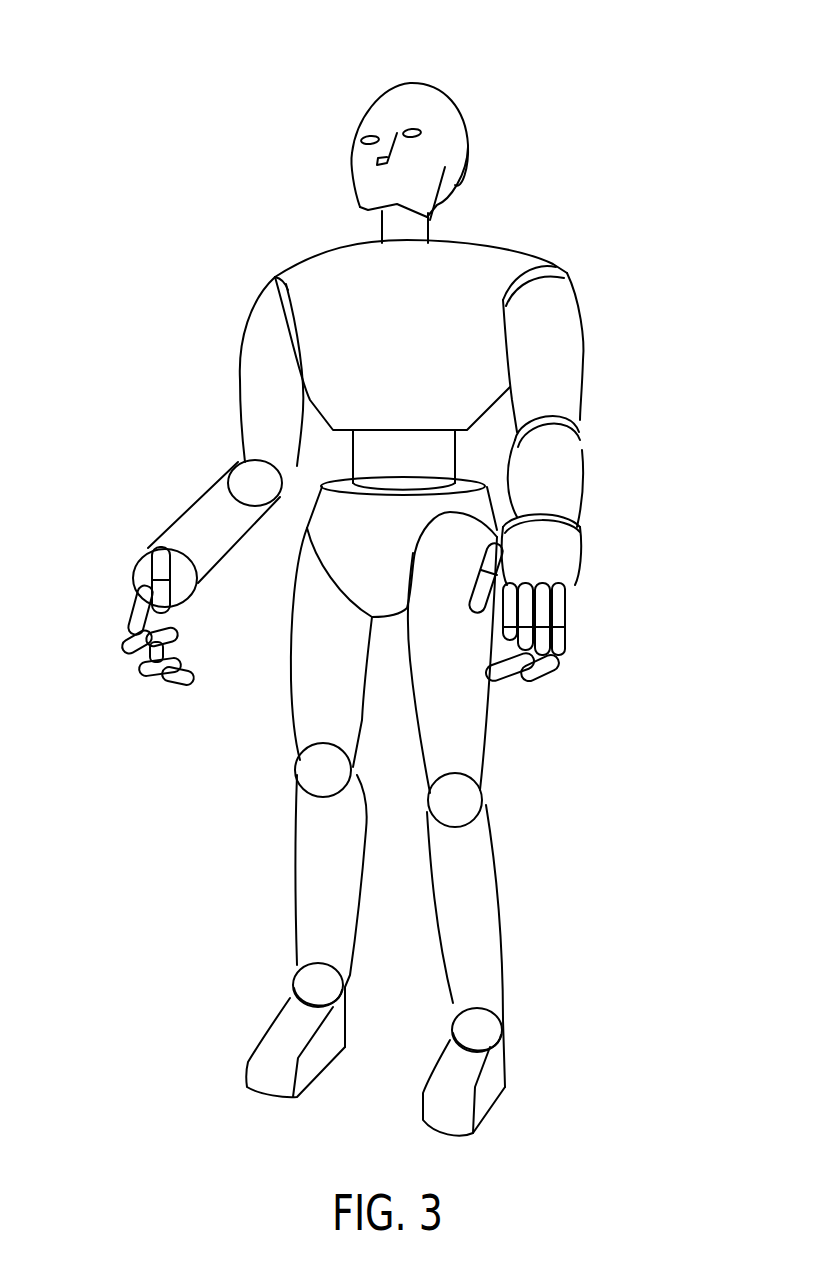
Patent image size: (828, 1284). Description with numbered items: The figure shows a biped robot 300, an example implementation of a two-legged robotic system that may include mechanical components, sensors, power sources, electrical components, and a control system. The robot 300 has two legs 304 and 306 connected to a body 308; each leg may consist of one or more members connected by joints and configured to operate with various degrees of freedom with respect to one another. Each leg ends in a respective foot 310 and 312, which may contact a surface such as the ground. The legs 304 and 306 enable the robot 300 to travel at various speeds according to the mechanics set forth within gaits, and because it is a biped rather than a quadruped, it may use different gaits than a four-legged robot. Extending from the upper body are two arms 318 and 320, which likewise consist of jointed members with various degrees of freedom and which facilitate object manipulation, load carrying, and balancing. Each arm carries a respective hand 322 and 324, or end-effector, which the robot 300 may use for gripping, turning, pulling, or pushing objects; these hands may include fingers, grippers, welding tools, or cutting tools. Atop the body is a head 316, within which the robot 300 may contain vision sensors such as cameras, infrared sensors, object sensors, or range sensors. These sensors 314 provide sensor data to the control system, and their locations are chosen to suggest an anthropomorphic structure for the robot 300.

The biped robot 300 is at (578, 193).
The leg 304 is at (505, 852).
The leg 306 is at (268, 832).
The body 308 is at (287, 533).
The foot 310 is at (500, 1073).
The foot 312 is at (272, 1017).
The sensor 314 is at (366, 139).
The head 316 is at (453, 84).
The arm 318 is at (593, 490).
The arm 320 is at (168, 508).
The hand 322 is at (577, 573).
The hand 324 is at (132, 577).